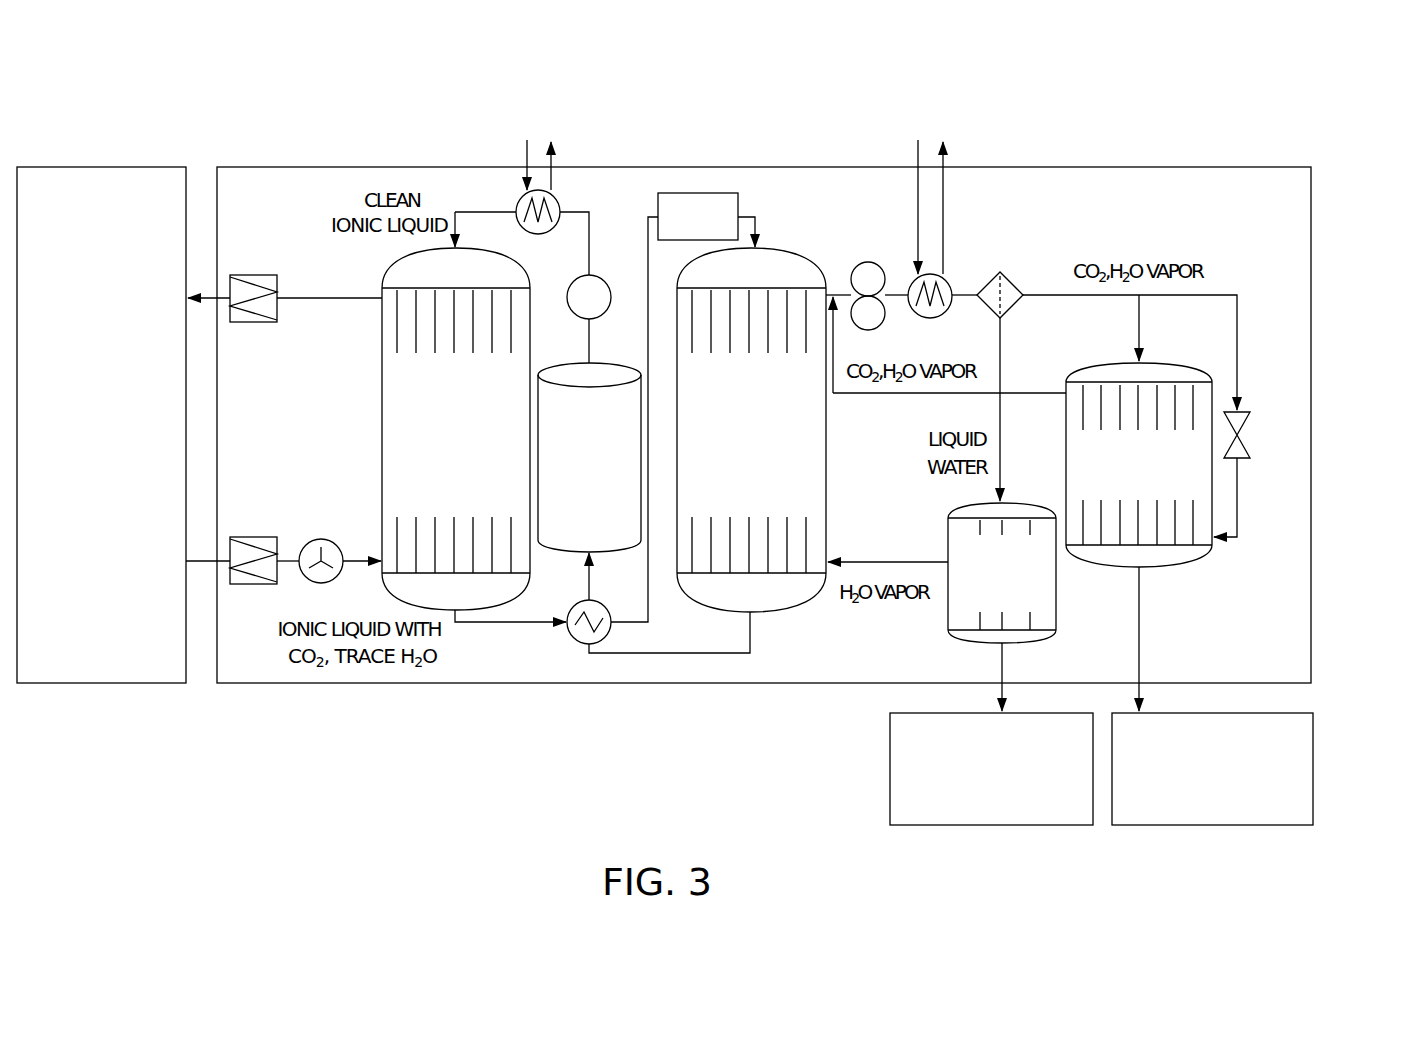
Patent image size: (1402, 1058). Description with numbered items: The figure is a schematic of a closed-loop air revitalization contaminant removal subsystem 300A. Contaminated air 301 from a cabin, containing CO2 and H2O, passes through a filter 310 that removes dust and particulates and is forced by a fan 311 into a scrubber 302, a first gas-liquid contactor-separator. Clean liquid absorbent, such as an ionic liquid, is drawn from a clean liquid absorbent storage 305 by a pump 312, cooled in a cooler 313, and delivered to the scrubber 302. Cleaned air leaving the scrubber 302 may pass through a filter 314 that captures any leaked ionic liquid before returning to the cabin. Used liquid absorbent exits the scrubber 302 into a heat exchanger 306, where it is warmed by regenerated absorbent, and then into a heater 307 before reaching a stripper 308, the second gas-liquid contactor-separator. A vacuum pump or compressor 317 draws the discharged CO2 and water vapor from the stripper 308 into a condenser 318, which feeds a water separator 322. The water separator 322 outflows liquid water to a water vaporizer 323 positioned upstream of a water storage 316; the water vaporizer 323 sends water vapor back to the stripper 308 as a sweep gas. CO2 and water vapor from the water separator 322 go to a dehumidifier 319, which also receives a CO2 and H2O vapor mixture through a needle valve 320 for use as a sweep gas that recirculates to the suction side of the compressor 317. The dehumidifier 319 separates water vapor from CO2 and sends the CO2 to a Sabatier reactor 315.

The contaminant removal subsystem 300A is at (1228, 148).
The contaminated air 301 is at (104, 166).
The scrubber 302 is at (380, 377).
The clean liquid absorbent storage 305 is at (558, 555).
The heat exchanger 306 is at (583, 645).
The heater 307 is at (681, 192).
The stripper 308 is at (757, 246).
The filter 310 is at (254, 536).
The fan 311 is at (325, 538).
The pump 312 is at (596, 274).
The cooler 313 is at (553, 195).
The filter 314 is at (268, 274).
The Sabatier reactor 315 is at (1314, 766).
The water storage 316 is at (889, 766).
The vacuum pump and/or compressor 317 is at (870, 262).
The condenser 318 is at (947, 280).
The dehumidifier 319 is at (1203, 542).
The needle valve 320 is at (1244, 411).
The water separator 322 is at (1012, 282).
The water vaporizer 323 is at (947, 532).